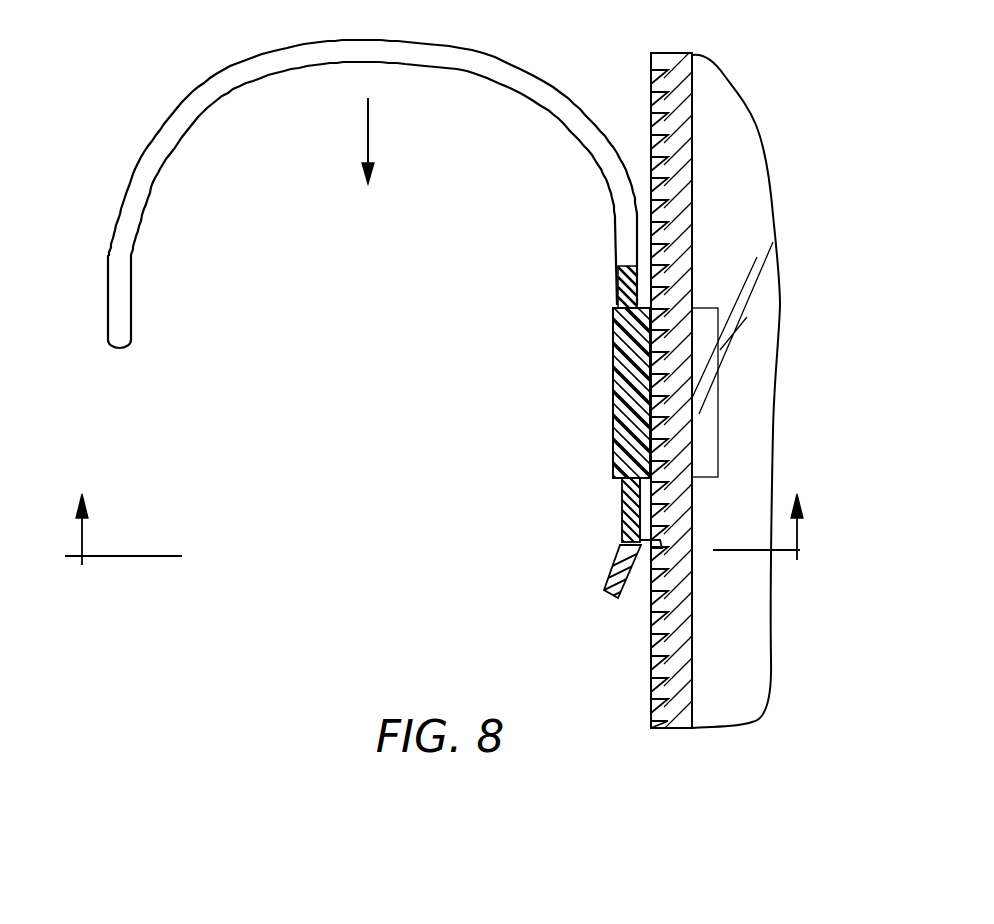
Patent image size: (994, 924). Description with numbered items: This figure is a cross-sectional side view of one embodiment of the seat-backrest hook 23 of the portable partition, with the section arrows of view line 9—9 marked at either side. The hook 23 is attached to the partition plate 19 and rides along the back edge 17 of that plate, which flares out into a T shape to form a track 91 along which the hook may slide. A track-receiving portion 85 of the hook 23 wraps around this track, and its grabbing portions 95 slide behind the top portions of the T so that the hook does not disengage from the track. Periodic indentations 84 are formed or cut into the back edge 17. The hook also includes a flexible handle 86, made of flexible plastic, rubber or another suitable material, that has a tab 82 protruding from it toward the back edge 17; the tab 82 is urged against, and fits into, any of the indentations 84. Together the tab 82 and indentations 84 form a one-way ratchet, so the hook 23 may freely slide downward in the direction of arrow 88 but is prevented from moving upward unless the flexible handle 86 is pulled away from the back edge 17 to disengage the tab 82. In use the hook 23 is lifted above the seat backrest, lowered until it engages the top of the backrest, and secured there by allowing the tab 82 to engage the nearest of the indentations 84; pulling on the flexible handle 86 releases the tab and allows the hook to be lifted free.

The seat-backrest hook 23 is at (288, 52).
The back edge 17 is at (677, 396).
The partition plate 19 is at (742, 176).
The arrow 88 is at (370, 128).
The track-receiving portion 85 is at (612, 368).
The grabbing portions 95 is at (718, 400).
The flexible handle 86 is at (622, 512).
The tab 82 is at (660, 545).
The indentations 84 is at (660, 673).
The track 91 is at (680, 683).
The view line 9— 9 is at (434, 511).